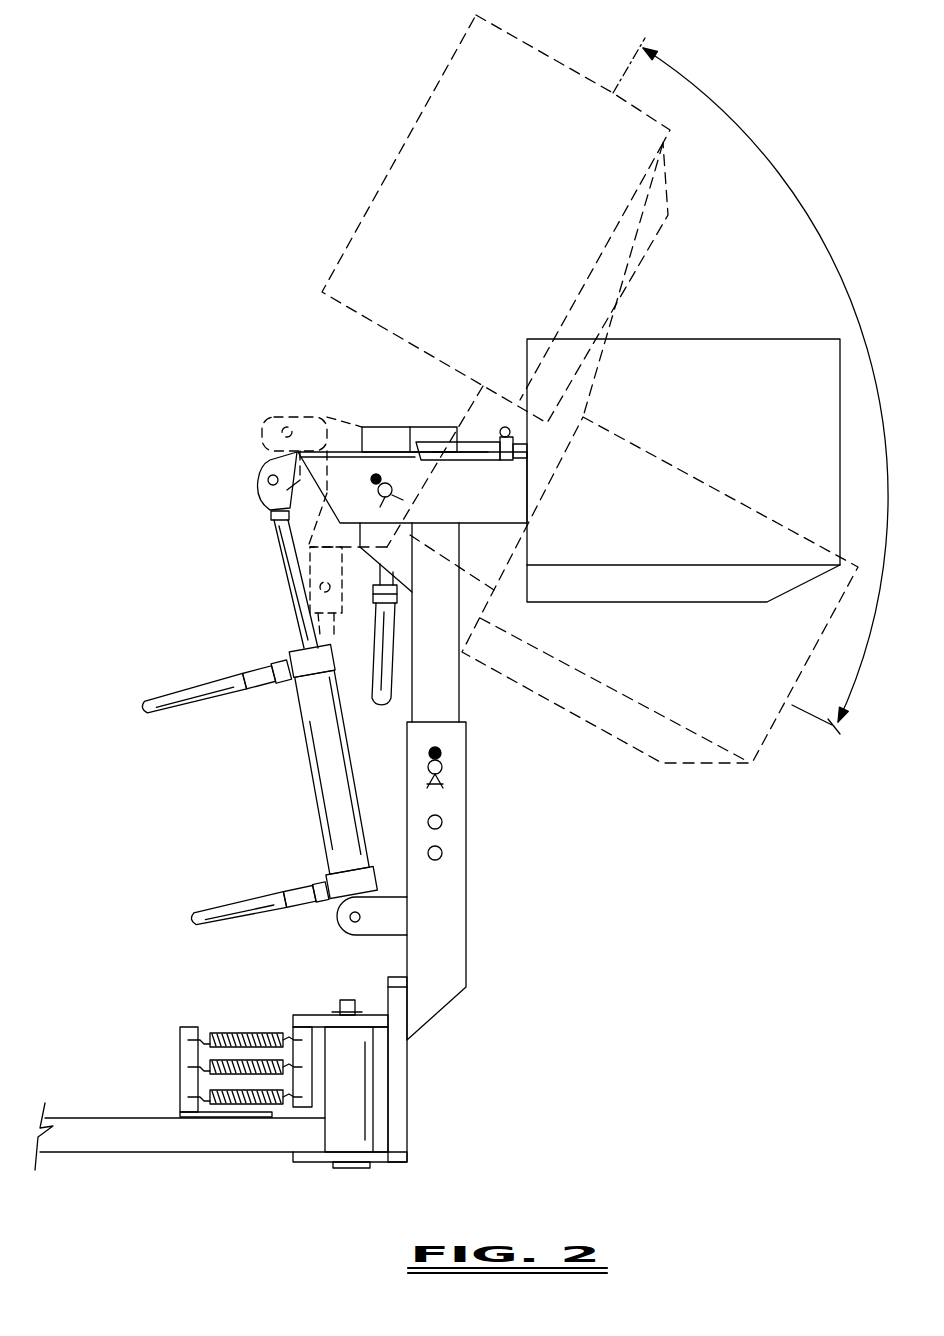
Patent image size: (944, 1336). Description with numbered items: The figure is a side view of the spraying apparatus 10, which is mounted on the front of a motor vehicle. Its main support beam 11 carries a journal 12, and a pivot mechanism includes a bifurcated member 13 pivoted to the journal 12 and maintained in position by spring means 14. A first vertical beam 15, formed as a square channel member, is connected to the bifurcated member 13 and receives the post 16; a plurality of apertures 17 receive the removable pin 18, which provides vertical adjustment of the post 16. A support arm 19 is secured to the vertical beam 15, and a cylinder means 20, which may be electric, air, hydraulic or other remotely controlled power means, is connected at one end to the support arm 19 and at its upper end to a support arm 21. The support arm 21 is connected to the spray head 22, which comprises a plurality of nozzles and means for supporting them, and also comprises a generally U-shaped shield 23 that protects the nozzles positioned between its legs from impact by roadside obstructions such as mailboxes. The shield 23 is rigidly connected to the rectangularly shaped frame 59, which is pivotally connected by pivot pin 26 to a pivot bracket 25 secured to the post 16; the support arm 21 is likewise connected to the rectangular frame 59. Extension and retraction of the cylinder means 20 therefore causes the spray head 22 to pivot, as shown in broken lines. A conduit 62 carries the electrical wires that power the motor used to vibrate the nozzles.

The spraying apparatus 10 is at (258, 388).
The main support beam 11 is at (105, 1118).
The journal 12 is at (335, 1099).
The bifurcated member 13 is at (408, 1093).
The spring means 14 is at (248, 1022).
The first vertical beam 15 is at (464, 928).
The post 16 is at (459, 692).
The apertures 17 is at (441, 827).
The removable pin 18 is at (442, 767).
The support arm 19 is at (380, 927).
The cylinder means 20 is at (305, 791).
The support arm 21 is at (278, 462).
The spray head 22 is at (742, 327).
The shield 23 is at (767, 340).
The pivot bracket 25 is at (366, 440).
The pivot pin 26 is at (378, 490).
The rectangular frame 59 is at (428, 509).
The conduit 62 is at (361, 614).